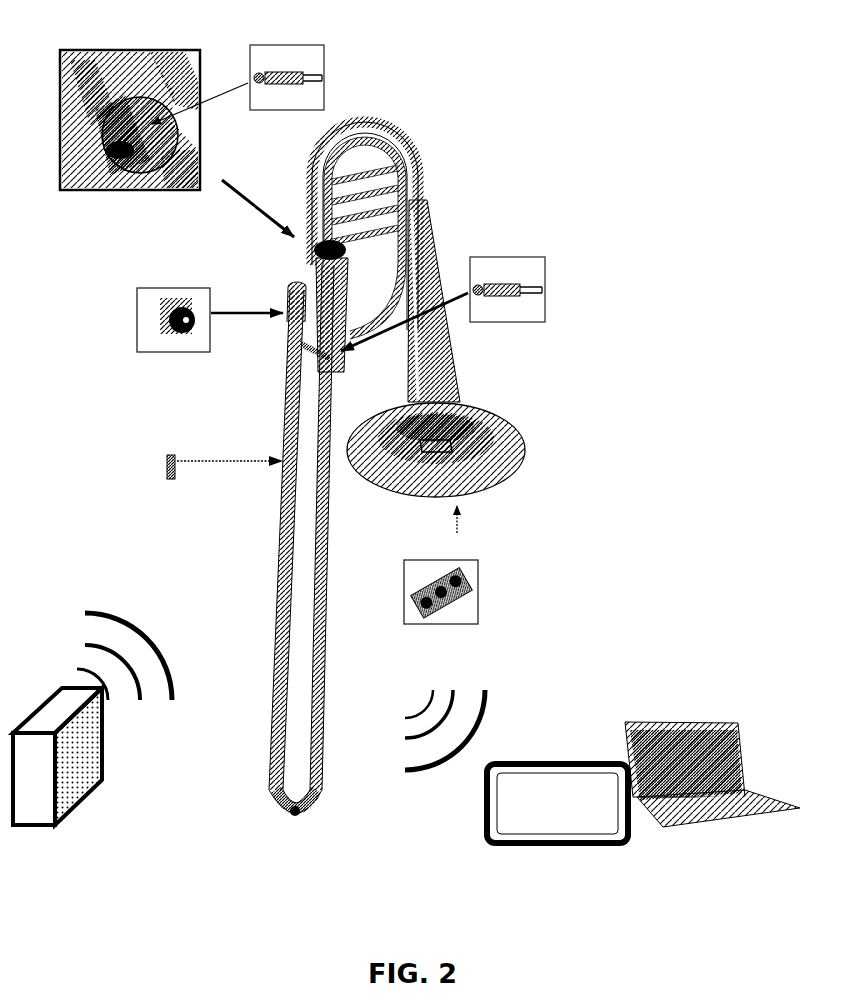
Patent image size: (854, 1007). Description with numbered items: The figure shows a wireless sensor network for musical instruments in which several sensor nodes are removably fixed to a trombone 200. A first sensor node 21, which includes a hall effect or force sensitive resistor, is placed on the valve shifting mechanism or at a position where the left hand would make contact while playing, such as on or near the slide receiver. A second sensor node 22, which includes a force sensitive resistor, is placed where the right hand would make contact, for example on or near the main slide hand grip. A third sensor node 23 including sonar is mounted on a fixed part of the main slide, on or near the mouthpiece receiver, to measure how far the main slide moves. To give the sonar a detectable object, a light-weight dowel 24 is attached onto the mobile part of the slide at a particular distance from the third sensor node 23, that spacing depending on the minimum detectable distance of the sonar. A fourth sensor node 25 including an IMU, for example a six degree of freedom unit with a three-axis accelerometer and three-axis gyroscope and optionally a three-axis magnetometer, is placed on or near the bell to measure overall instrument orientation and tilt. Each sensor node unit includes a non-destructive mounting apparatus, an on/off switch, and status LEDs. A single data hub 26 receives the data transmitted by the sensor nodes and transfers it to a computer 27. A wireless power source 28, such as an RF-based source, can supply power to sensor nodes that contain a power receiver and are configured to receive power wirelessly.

The trombone 200 is at (423, 200).
The first sensor node 21 is at (318, 53).
The second sensor node 22 is at (538, 266).
The third sensor node 23 is at (147, 307).
The dowel 24 is at (167, 470).
The fourth sensor node 25 is at (470, 603).
The data hub 26 is at (590, 778).
The computer 27 is at (720, 733).
The wireless power source 28 is at (105, 752).